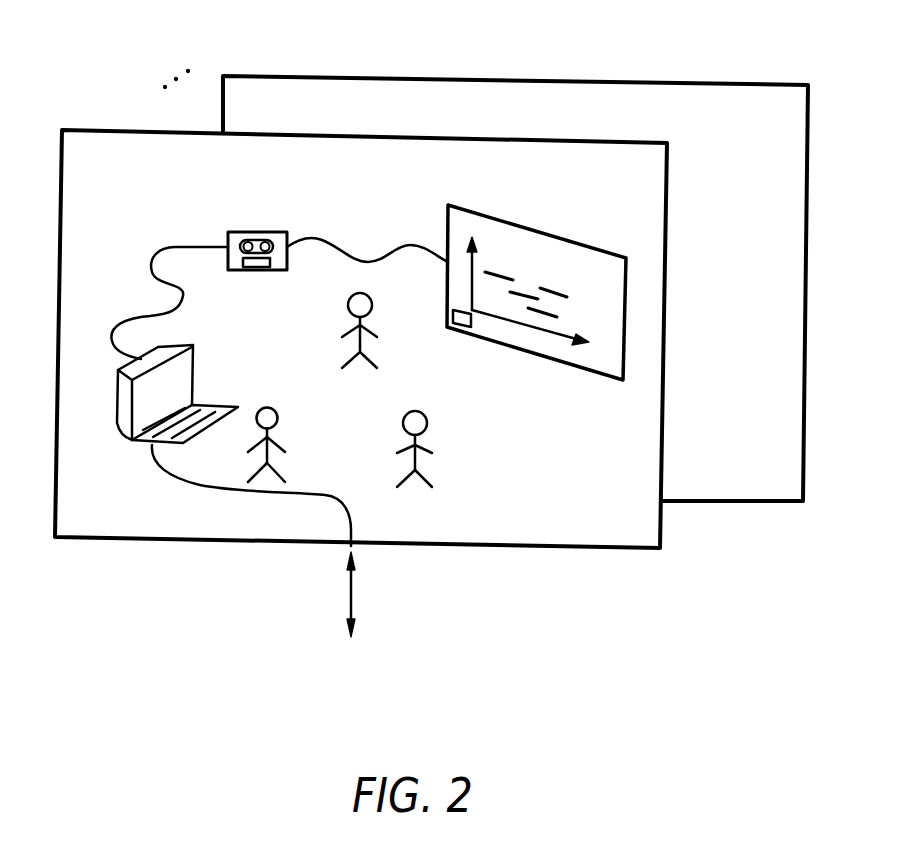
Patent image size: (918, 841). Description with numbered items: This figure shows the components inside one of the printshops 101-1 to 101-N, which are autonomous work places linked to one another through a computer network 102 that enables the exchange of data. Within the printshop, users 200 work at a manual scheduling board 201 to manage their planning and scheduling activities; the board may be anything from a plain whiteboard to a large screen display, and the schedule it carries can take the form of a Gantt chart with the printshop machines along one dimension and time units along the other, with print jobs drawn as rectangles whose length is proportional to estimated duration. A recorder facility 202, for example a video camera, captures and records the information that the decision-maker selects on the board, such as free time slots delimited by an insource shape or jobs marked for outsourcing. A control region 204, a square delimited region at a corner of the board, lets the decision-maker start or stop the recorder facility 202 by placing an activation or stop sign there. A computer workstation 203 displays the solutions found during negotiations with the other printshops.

The printshop 101-1 is at (148, 130).
The printshop 101-N is at (287, 76).
The computer network 102 is at (353, 614).
The users 200 is at (426, 416).
The manual scheduling board 201 is at (503, 222).
The recorder facility 202 is at (250, 232).
The computer workstation 203 is at (193, 348).
The control region 204 is at (461, 330).